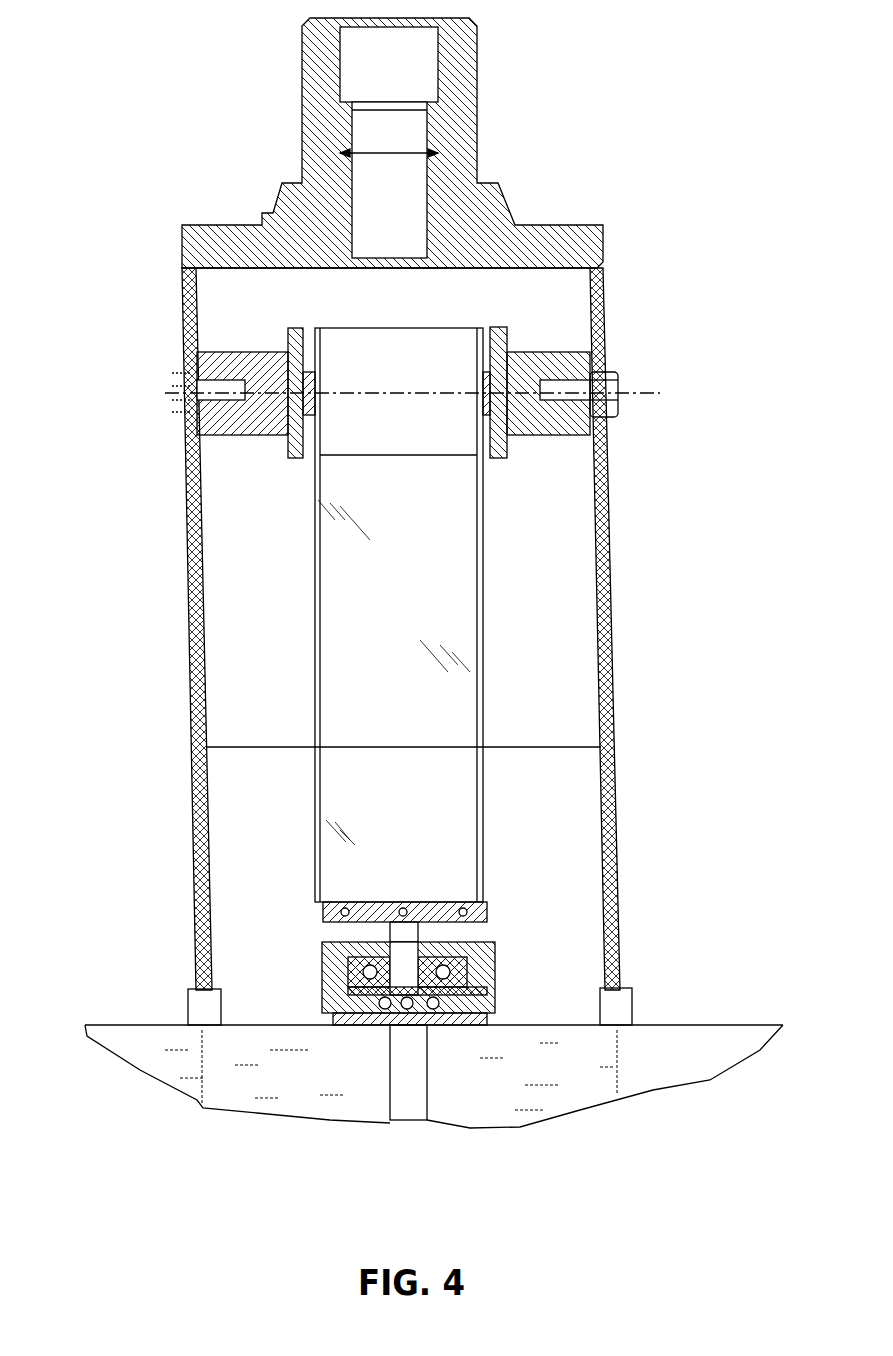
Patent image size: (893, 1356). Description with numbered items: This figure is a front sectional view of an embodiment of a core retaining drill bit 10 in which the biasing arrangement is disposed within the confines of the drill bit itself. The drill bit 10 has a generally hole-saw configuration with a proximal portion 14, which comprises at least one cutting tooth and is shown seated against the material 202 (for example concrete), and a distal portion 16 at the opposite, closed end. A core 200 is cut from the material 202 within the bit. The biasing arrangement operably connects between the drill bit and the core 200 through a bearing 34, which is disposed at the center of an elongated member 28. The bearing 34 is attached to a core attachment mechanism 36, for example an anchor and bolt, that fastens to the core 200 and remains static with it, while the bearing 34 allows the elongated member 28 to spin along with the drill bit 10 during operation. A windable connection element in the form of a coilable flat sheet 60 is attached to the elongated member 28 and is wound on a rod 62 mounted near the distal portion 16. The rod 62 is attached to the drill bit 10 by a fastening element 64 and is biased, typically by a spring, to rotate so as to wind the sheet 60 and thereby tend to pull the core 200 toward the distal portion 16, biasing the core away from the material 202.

The core retaining drill bit 10 is at (361, 521).
The distal portion 16 is at (588, 222).
The proximal portion 14 is at (176, 984).
The fastening element 64 is at (167, 375).
The rod 62 is at (313, 416).
The coilable flat sheet 60 is at (442, 523).
The elongated member 28 is at (325, 912).
The bearing 34 is at (488, 929).
The core attachment mechanism 36 is at (432, 1045).
The core 200 is at (288, 1033).
The material 202 is at (715, 1033).